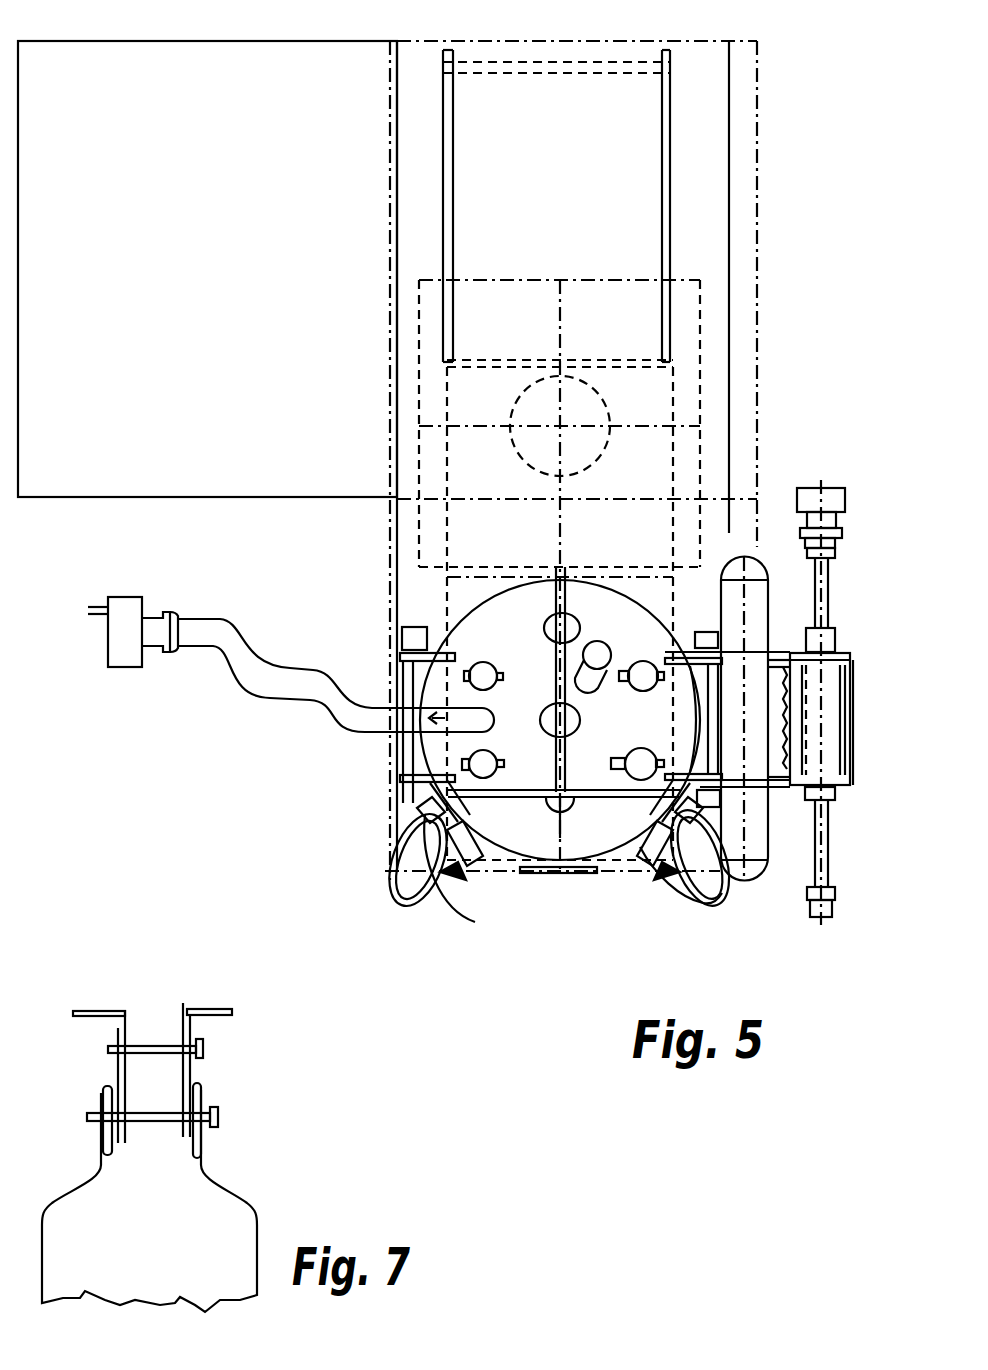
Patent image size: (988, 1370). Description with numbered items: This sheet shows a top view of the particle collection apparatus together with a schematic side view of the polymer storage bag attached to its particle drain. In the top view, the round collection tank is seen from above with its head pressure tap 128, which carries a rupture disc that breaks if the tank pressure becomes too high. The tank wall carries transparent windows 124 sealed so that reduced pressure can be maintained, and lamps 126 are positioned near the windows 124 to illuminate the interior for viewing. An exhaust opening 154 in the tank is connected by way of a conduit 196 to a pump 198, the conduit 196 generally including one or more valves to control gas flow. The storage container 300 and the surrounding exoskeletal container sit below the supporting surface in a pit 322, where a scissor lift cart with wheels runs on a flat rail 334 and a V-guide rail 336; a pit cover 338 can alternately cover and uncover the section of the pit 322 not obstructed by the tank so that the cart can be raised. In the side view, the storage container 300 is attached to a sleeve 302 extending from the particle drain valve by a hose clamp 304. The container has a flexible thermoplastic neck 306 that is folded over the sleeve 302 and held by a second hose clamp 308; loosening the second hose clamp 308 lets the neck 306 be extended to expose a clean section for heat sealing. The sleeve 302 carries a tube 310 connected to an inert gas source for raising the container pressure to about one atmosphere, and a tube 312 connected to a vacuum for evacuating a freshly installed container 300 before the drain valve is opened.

In FIG. 5, the flat rail 334 is at (446, 98).
In FIG. 5, the V-guide rail 336 is at (672, 88).
In FIG. 5, the pit 322 is at (710, 262).
In FIG. 5, the pit cover 338 is at (40, 484).
In FIG. 5, the pump 198 is at (117, 597).
In FIG. 5, the conduit 196 is at (193, 619).
In FIG. 5, the exhaust opening 154 is at (410, 745).
In FIG. 5, the head pressure tap 128 is at (582, 672).
In FIG. 5, the lamp 126 is at (412, 818).
In FIG. 5, the window 124 is at (472, 921).
In FIG. 7, the tube 310 is at (85, 1011).
In FIG. 7, the tube 312 is at (197, 1003).
In FIG. 7, the sleeve 302 is at (188, 1020).
In FIG. 7, the hose clamp 304 is at (205, 1048).
In FIG. 7, the flexible neck 306 is at (100, 1092).
In FIG. 7, the second hose clamp 308 is at (218, 1115).
In FIG. 7, the storage container 300 is at (240, 1195).